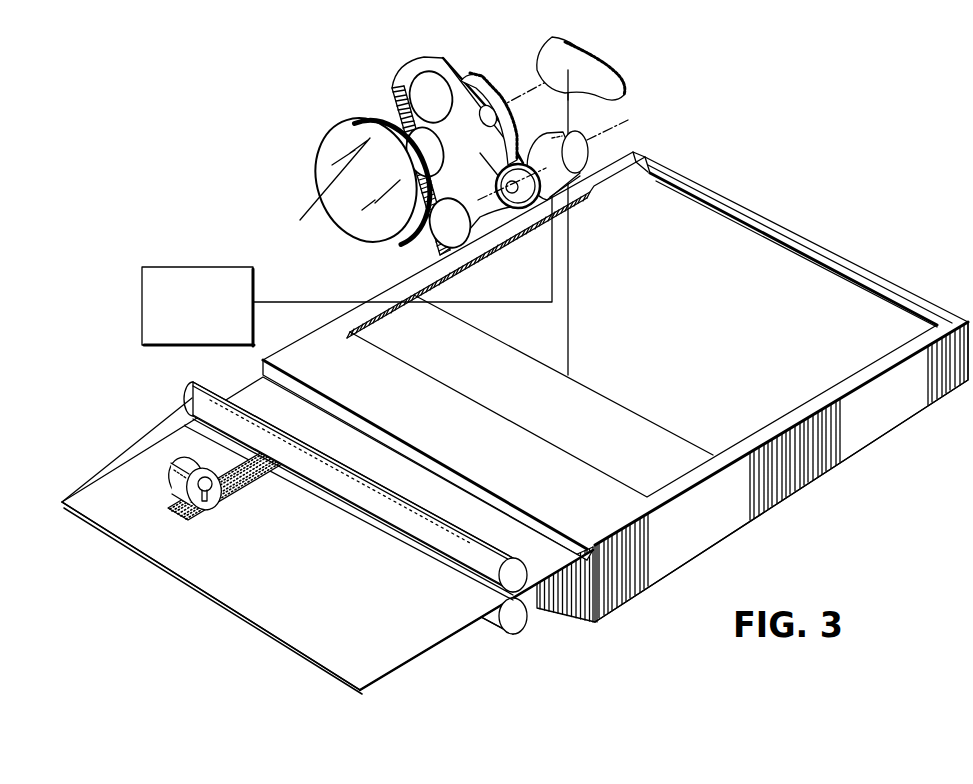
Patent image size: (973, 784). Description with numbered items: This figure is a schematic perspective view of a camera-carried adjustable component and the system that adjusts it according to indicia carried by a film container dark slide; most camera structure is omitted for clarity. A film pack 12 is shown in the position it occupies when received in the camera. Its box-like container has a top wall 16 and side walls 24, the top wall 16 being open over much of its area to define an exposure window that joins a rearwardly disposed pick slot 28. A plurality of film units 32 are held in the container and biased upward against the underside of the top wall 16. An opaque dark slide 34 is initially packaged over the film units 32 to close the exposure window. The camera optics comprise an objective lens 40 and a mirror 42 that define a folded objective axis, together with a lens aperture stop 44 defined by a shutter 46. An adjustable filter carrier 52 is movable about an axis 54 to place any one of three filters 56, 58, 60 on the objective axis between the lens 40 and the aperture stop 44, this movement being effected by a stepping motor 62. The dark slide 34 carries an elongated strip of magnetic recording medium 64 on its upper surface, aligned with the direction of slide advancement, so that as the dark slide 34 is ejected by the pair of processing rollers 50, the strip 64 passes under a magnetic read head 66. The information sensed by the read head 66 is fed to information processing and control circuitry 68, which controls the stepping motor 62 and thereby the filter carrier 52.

The film pack 12 is at (615, 379).
The top wall 16 is at (468, 439).
The side walls 24 is at (714, 527).
The pick slot 28 is at (649, 161).
The film units 32 is at (690, 329).
The dark slide 34 is at (324, 572).
The objective lens 40 is at (320, 163).
The mirror 42 is at (613, 98).
The lens aperture stop 44 is at (489, 108).
The shutter 46 is at (477, 93).
The processing rollers 50 is at (327, 535).
The adjustable filter carrier 52 is at (487, 150).
The axis 54 is at (514, 194).
The filter 56 is at (403, 78).
The filter 58 is at (392, 104).
The filter 60 is at (447, 238).
The stepping motor 62 is at (588, 152).
The magnetic recording medium strip 64 is at (255, 470).
The magnetic read head 66 is at (170, 478).
The information processing and control circuitry 68 is at (175, 266).